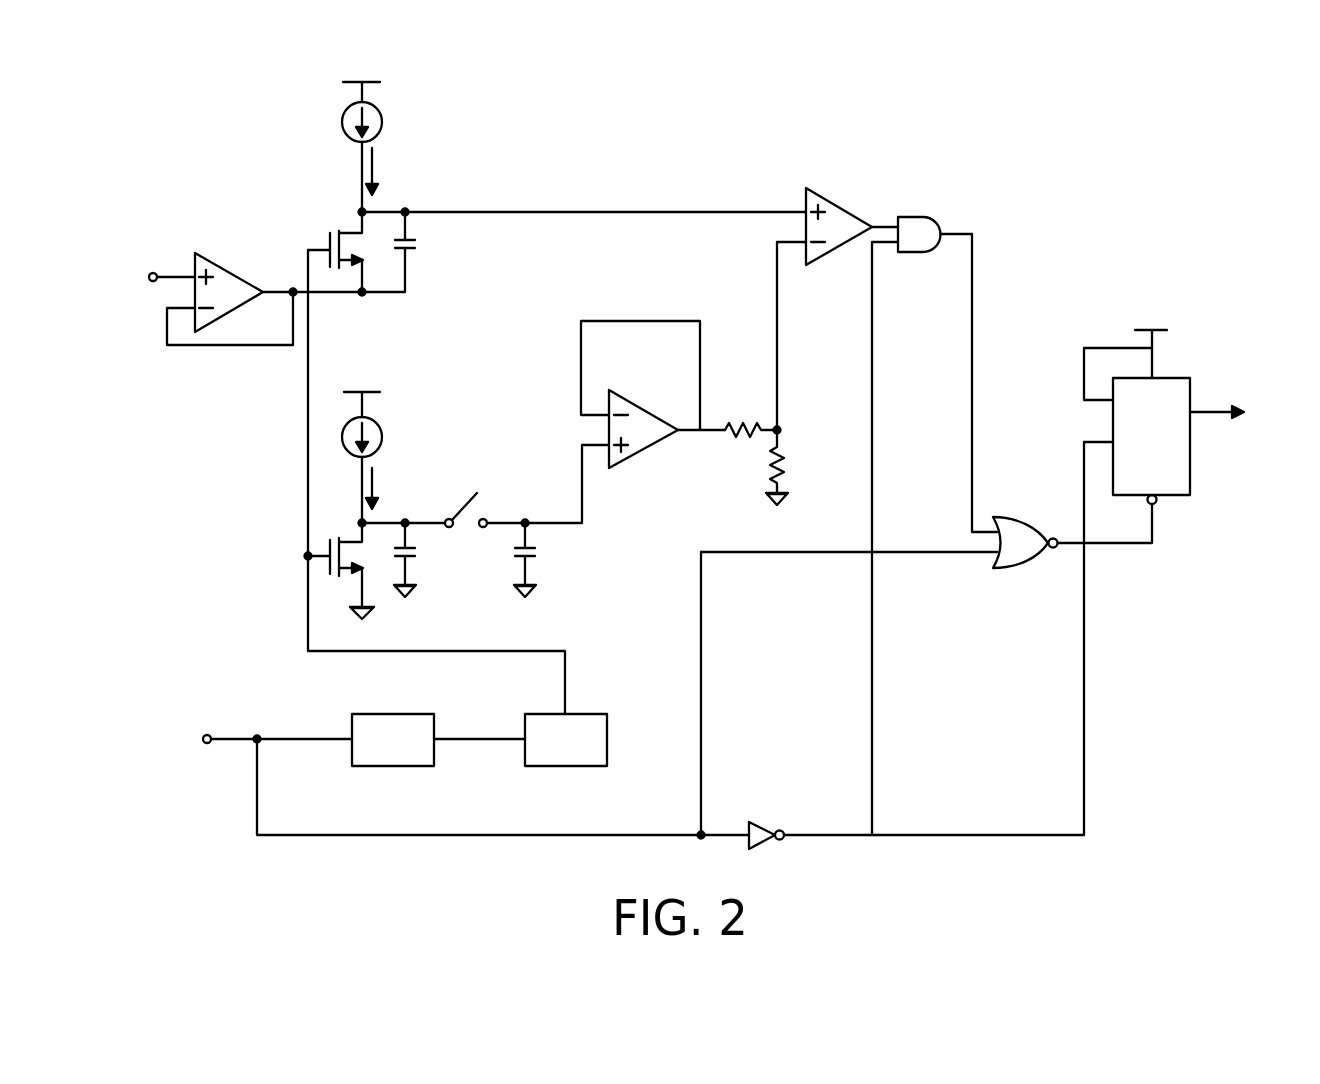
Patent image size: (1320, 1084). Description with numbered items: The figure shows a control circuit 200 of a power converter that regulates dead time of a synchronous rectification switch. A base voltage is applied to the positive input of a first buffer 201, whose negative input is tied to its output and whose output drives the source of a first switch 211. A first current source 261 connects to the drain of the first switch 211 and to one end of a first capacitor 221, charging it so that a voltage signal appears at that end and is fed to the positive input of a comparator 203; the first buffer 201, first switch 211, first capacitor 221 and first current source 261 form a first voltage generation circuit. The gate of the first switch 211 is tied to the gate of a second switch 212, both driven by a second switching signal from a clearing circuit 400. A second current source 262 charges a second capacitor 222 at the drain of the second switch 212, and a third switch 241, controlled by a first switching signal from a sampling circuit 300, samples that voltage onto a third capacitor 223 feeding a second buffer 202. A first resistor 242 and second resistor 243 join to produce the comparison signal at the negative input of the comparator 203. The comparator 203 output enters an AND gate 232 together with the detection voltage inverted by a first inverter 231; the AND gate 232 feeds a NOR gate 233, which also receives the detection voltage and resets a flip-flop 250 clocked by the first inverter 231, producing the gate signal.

The control circuit 200 is at (1188, 168).
The first buffer 201 is at (221, 284).
The second buffer 202 is at (653, 394).
The comparator 203 is at (852, 204).
The first switch 211 is at (326, 424).
The second switch 212 is at (341, 561).
The first capacitor 221 is at (430, 252).
The second capacitor 222 is at (430, 560).
The third capacitor 223 is at (552, 560).
The first inverter 231 is at (915, 815).
The AND gate 232 is at (934, 526).
The NOR gate 233 is at (926, 558).
The third switch 241 is at (485, 486).
The first resistor 242 is at (749, 411).
The second resistor 243 is at (801, 467).
The flip-flop 250 is at (1164, 582).
The first current source 261 is at (382, 124).
The second current source 262 is at (378, 427).
The sampling circuit 300 is at (438, 740).
The clearing circuit 400 is at (457, 708).